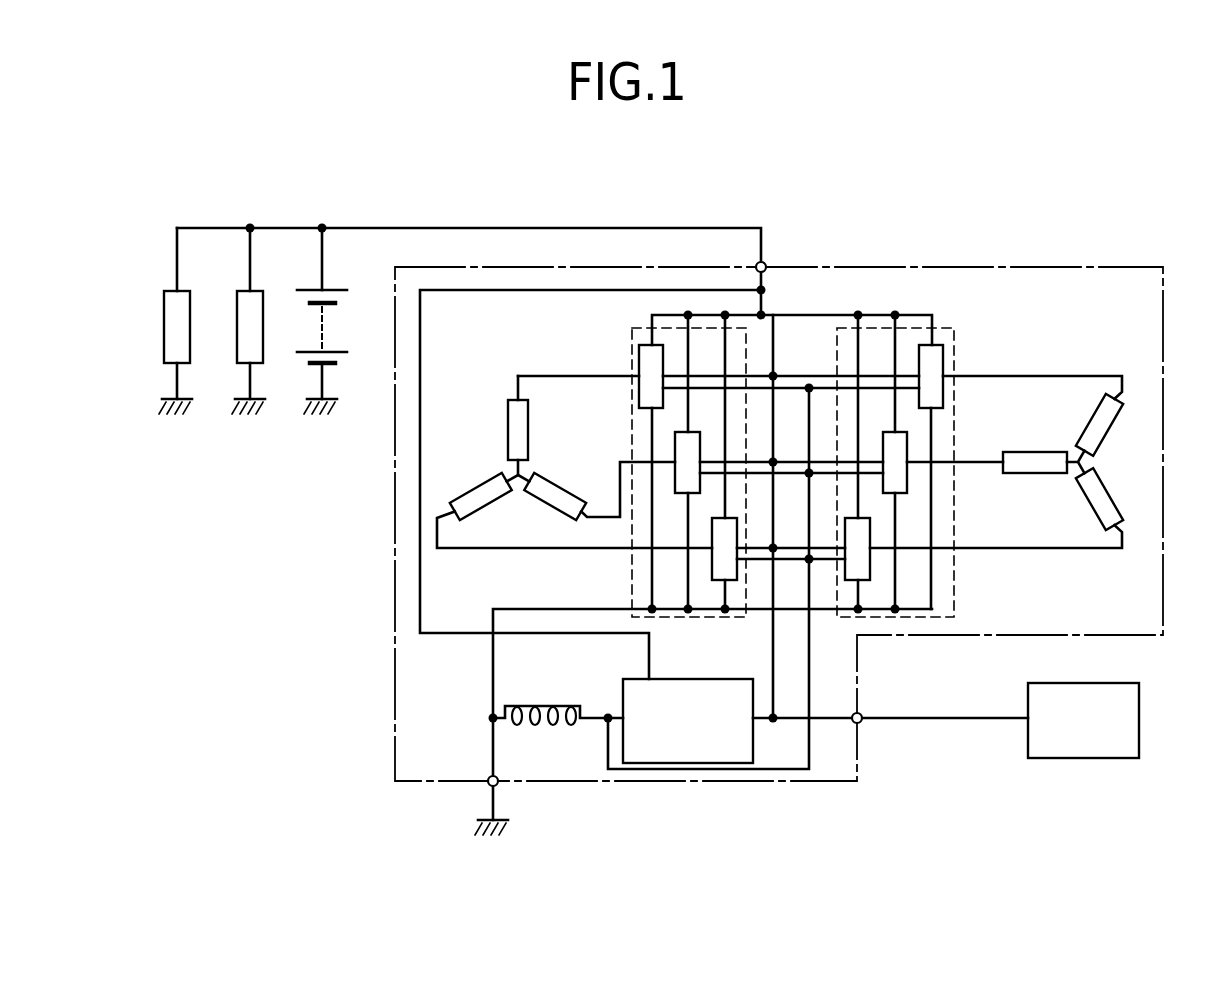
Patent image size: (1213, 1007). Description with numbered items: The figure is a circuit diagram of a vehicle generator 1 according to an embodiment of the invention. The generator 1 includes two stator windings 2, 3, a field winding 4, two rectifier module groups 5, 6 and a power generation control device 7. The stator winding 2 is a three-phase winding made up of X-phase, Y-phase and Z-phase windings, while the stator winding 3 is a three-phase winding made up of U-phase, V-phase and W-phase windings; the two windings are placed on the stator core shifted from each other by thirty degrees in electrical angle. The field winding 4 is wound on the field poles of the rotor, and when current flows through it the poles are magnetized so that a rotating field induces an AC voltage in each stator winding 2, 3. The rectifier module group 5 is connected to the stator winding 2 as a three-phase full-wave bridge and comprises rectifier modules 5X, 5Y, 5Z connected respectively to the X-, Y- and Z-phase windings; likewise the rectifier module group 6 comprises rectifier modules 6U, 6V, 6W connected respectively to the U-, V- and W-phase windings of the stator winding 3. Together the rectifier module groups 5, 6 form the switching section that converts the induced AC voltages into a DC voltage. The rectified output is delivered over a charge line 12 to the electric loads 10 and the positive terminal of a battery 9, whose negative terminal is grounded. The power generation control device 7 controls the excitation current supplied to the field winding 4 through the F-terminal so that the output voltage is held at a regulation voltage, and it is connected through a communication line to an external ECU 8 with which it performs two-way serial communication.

The vehicle generator 1 is at (1125, 266).
The stator winding 2 is at (500, 462).
The stator winding 3 is at (1076, 455).
The field winding 4 is at (547, 706).
The rectifier module group 5 is at (632, 369).
The rectifier module 5X is at (639, 346).
The rectifier module 5Y is at (712, 558).
The rectifier module 5Z is at (674, 447).
The rectifier module group 6 is at (955, 370).
The rectifier module 6U is at (935, 345).
The rectifier module 6V is at (908, 443).
The rectifier module 6W is at (870, 563).
The power generation control device 7 is at (684, 679).
The ECU 8 is at (1128, 683).
The battery 9 is at (340, 352).
The electric loads 10 is at (164, 292).
The charge line 12 is at (452, 228).